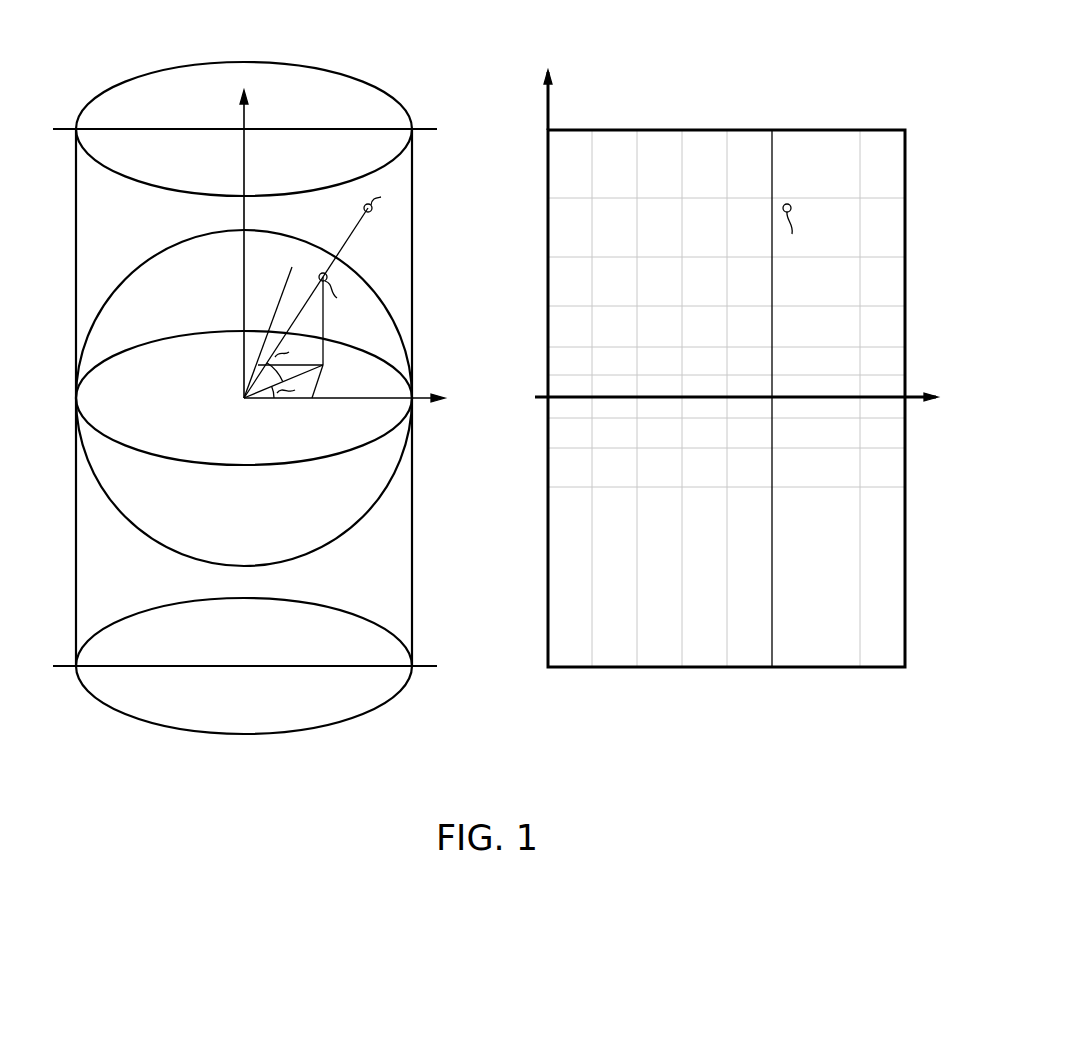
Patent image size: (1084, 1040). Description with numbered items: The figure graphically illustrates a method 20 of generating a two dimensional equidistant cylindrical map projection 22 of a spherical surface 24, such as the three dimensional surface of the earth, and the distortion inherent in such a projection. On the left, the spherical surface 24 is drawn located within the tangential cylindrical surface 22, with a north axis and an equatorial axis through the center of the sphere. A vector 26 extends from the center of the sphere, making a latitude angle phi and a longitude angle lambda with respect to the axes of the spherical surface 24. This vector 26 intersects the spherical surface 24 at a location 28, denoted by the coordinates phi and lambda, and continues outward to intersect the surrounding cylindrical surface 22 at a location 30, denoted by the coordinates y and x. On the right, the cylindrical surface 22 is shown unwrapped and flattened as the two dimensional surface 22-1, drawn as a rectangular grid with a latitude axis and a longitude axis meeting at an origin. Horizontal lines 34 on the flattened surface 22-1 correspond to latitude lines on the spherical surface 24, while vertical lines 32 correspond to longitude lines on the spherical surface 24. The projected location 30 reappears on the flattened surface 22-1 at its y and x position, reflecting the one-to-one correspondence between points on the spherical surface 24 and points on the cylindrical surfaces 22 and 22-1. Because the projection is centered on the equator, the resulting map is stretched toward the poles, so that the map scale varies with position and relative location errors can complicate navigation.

The method 20 is at (704, 831).
The equidistant cylindrical map projection 22 is at (343, 72).
The two dimensional surface 22-1 is at (750, 130).
The spherical surface 24 is at (220, 463).
The vector 26 is at (352, 233).
The location 28 is at (320, 274).
The location 30 is at (370, 212).
The vertical lines 32 is at (772, 518).
The horizontal lines 34 is at (702, 257).